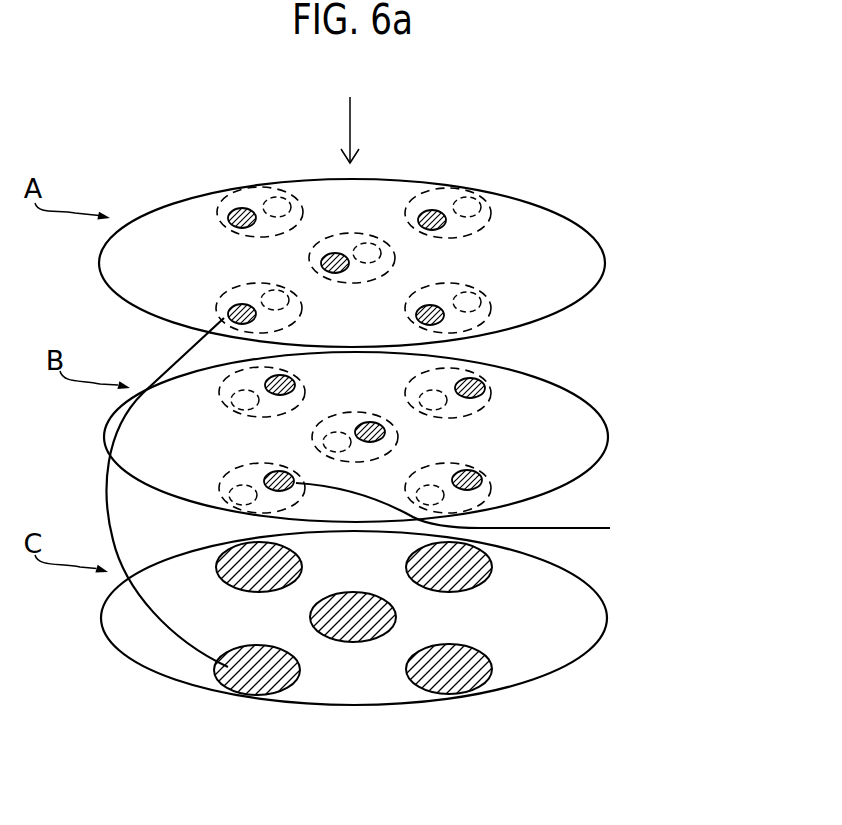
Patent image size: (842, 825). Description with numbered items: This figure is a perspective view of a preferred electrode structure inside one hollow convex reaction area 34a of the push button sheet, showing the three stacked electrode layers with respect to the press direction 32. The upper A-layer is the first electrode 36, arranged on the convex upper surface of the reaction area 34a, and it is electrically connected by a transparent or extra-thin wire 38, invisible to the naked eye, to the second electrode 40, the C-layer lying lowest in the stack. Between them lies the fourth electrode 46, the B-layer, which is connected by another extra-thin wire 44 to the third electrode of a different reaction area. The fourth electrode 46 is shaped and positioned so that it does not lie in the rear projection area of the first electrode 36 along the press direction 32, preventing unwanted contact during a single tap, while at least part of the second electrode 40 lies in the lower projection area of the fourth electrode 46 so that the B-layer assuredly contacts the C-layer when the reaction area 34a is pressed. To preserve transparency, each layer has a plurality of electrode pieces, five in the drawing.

The press direction 32 is at (350, 123).
The reaction area 34a is at (614, 172).
The first electrode 36 is at (232, 308).
The extra-thin wire 38 is at (147, 608).
The second electrode 40 is at (222, 683).
The extra-thin wire 44 is at (587, 530).
The fourth electrode 46 is at (266, 478).